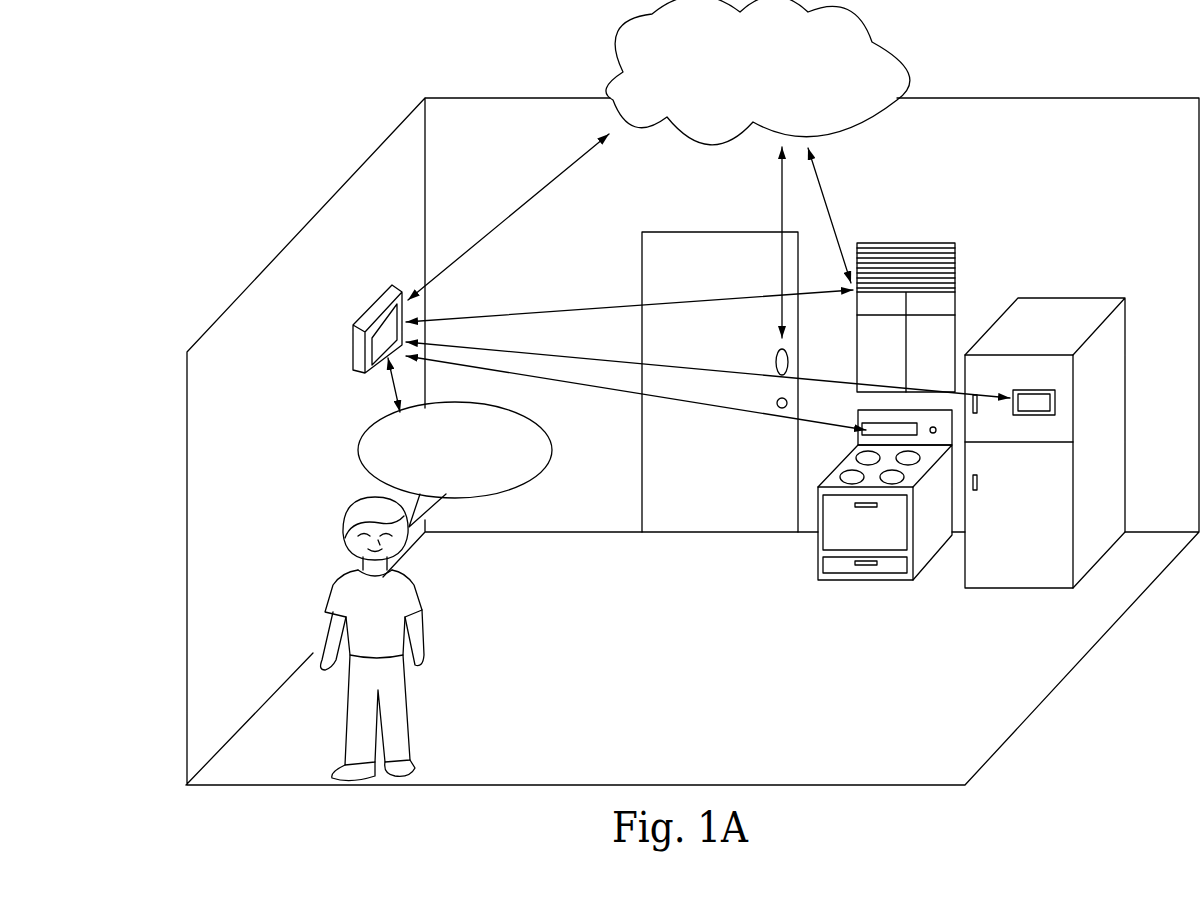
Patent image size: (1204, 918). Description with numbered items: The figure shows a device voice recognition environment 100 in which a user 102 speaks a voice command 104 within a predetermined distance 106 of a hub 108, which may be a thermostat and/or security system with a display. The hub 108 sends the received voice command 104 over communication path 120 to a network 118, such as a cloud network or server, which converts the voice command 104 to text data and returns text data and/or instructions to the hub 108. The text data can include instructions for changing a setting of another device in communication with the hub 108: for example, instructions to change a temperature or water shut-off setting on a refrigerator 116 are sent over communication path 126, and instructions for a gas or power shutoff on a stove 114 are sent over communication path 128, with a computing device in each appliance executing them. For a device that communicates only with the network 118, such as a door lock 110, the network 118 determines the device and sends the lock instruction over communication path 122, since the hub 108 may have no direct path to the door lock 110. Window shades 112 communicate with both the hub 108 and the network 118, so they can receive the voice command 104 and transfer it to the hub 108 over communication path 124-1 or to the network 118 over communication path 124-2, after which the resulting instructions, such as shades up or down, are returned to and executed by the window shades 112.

The device voice recognition environment 100 is at (220, 178).
The user 102 is at (340, 525).
The voice command 104 is at (360, 447).
The predetermined distance 106 is at (386, 396).
The hub 108 is at (356, 323).
The door lock 110 is at (776, 361).
The window shades 112 is at (957, 245).
The stove 114 is at (857, 422).
The refrigerator 116 is at (1075, 298).
The network 118 is at (908, 80).
The communication path 120 is at (493, 230).
The communication path 122 is at (781, 210).
The communication path 124-1 is at (558, 310).
The communication path 124-2 is at (830, 205).
The communication path 126 is at (553, 354).
The communication path 128 is at (575, 386).